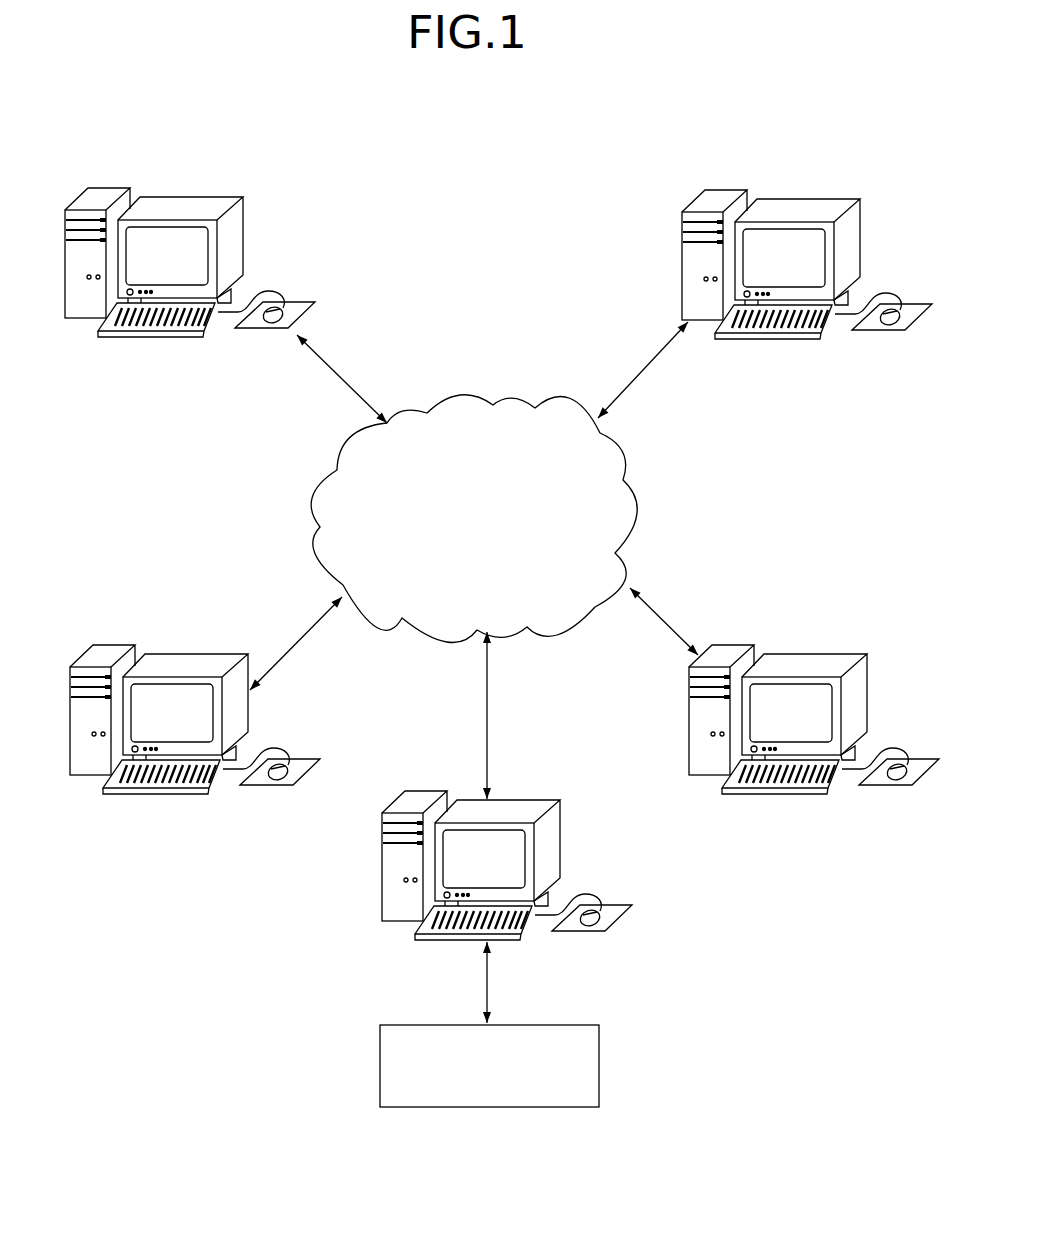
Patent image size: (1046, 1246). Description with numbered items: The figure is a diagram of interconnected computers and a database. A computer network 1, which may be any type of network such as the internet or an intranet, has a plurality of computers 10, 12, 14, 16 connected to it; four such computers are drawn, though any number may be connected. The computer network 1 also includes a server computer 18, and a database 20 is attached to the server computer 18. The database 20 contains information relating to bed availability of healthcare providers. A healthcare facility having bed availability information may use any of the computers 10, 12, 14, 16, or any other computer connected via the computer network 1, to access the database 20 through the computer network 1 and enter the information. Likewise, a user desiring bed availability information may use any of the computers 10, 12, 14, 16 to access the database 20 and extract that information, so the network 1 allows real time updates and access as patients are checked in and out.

The computer network 1 is at (502, 358).
The computer 10 is at (195, 653).
The computer 12 is at (193, 197).
The computer 14 is at (813, 198).
The computer 16 is at (822, 653).
The server computer 18 is at (380, 865).
The database 20 is at (380, 1060).